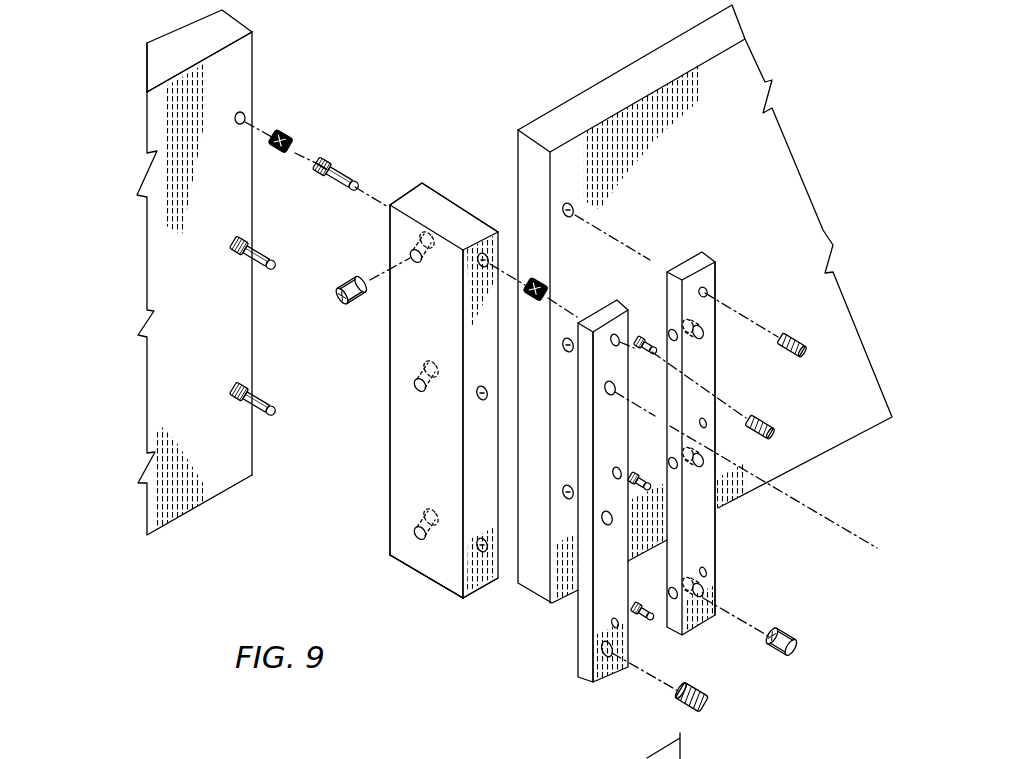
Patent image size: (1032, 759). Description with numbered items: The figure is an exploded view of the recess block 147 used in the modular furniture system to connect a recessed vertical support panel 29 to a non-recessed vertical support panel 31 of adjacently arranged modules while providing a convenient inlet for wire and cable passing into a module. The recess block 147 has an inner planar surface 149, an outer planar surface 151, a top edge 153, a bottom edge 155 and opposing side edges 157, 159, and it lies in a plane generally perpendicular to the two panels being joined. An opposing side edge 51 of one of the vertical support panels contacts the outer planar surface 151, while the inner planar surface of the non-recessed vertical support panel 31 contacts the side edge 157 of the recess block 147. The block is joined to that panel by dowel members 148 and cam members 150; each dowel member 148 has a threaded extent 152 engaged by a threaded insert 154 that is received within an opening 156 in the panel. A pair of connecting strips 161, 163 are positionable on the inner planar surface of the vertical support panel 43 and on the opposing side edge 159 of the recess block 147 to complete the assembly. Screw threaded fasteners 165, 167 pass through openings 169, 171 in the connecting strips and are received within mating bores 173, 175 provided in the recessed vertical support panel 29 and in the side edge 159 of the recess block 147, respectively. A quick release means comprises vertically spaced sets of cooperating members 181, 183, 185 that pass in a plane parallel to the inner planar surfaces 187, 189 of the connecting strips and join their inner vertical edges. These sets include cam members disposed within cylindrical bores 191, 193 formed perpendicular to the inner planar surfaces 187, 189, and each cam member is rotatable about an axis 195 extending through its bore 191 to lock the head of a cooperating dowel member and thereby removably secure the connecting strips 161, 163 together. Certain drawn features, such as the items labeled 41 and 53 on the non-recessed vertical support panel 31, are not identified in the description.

The recessed vertical support panel 29 is at (664, 322).
The non-recessed vertical support panel 31 is at (184, 272).
The front face of side bar 41 is at (163, 70).
The vertical support panel 43 is at (598, 105).
The opposing side edge 51 is at (522, 584).
The edge of side bar 53 is at (252, 80).
The recess block 147 is at (395, 352).
The dowel member 148 is at (342, 168).
The inner planar surface 149 is at (400, 477).
The cam member 150 is at (348, 283).
The outer planar surface 151 is at (395, 557).
The threaded extent 152 is at (320, 163).
The top edge 153 is at (448, 222).
The threaded insert 154 is at (290, 140).
The bottom edge 155 is at (433, 583).
The opening 156 is at (233, 116).
The opposing side edge 157 is at (390, 337).
The opposing side edge 159 is at (473, 473).
The connecting strip 161 is at (784, 422).
The connecting strip 163 is at (471, 501).
The screw threaded fastener 165 is at (800, 343).
The screw threaded fastener 167 is at (772, 437).
The opening 169 is at (705, 291).
The opening 171 is at (612, 342).
The mating bore 173 is at (570, 212).
The mating bore 175 is at (480, 262).
The cooperating member 181 is at (644, 335).
The cooperating member 183 is at (637, 493).
The cooperating member 185 is at (638, 617).
The inner planar surface 187 is at (603, 600).
The inner planar surface 189 is at (703, 537).
The cylindrical bore 191 is at (608, 388).
The cylindrical bore 193 is at (700, 332).
The axis 195 is at (830, 518).